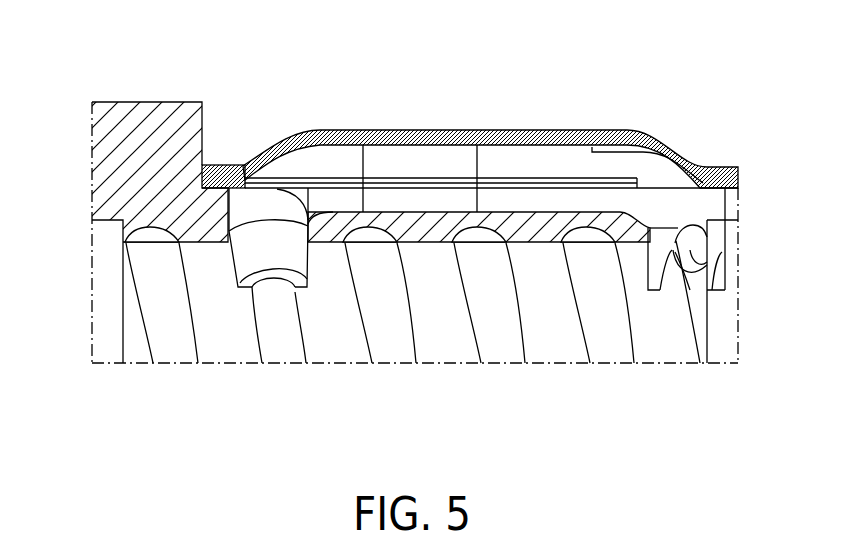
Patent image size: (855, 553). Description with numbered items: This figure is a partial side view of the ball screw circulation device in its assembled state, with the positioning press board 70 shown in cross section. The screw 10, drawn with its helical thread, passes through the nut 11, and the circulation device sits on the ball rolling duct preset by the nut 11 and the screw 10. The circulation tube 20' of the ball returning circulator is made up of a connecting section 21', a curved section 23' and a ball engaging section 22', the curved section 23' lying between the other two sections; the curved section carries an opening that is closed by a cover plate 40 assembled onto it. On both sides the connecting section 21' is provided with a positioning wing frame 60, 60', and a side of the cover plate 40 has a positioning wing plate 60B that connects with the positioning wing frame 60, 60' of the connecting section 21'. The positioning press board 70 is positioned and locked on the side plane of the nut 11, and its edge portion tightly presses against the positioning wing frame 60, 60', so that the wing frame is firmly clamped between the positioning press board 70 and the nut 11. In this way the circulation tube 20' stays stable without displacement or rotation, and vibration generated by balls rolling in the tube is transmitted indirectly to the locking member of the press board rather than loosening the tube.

The screw 10 is at (262, 341).
The nut 11 is at (138, 102).
The circulation tube 20' is at (646, 188).
The connecting section 21' is at (584, 105).
The ball engaging section 22' is at (707, 210).
The curved section 23' is at (660, 125).
The cover plate 40 is at (313, 200).
The positioning wing frame 60 is at (361, 132).
The positioning wing frame 60' is at (557, 134).
The positioning wing plate 60B is at (282, 177).
The positioning press board 70 is at (388, 130).